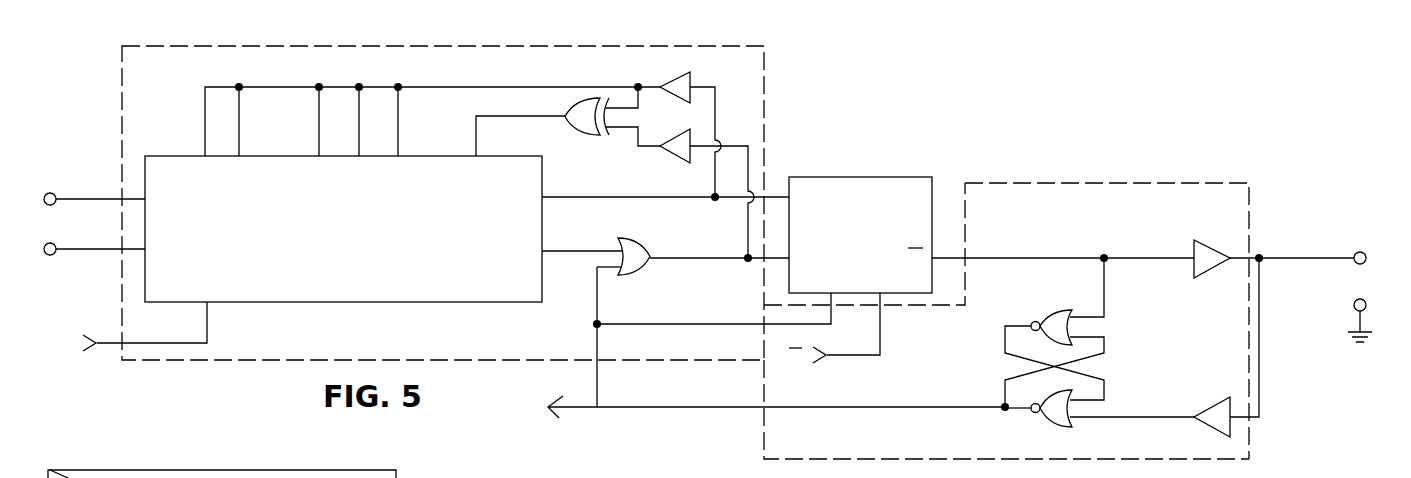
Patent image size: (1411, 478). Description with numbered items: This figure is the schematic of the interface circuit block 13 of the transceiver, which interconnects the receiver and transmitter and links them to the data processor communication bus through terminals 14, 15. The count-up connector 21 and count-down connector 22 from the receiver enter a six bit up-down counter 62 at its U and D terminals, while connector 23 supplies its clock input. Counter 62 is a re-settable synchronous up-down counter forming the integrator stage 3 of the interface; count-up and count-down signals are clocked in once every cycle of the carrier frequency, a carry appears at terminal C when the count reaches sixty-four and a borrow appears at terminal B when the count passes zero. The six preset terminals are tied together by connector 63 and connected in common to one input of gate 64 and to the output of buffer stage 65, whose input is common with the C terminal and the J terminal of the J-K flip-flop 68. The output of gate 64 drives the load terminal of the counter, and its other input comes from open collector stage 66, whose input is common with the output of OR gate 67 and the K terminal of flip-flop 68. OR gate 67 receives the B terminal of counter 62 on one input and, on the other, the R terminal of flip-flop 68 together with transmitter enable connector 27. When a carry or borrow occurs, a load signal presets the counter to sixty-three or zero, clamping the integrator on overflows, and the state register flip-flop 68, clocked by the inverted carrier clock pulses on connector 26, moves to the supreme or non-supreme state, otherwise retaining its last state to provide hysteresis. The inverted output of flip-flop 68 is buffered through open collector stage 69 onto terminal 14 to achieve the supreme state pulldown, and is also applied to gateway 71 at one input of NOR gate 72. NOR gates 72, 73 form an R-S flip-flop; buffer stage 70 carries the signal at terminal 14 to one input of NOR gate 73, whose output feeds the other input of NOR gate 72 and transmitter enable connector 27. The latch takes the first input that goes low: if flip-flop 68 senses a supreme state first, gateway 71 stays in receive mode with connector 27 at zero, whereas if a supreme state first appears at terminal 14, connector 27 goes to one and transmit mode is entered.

The integrator stage 3 is at (766, 88).
The interface circuit block 13 is at (829, 143).
The terminal 14 is at (1365, 253).
The terminal 15 is at (1366, 306).
The count-up connector 21 is at (51, 193).
The count-down connector 22 is at (52, 255).
The connector 23 is at (207, 323).
The f̄ connector 26 is at (880, 333).
The transmitter enable connector 27 is at (573, 410).
The six bit up-down counter 62 is at (467, 303).
The connector 63 is at (295, 87).
The gate 64 is at (578, 135).
The buffer stage 65 is at (672, 81).
The open collector stage 66 is at (672, 157).
The OR gate 67 is at (641, 244).
The J-K flip-flop 68 is at (872, 236).
The open collector stage 69 is at (1218, 240).
The buffer stage 70 is at (1210, 397).
The gateway 71 is at (1110, 183).
The NOR gate 72 is at (1057, 310).
The NOR gate 73 is at (1055, 427).